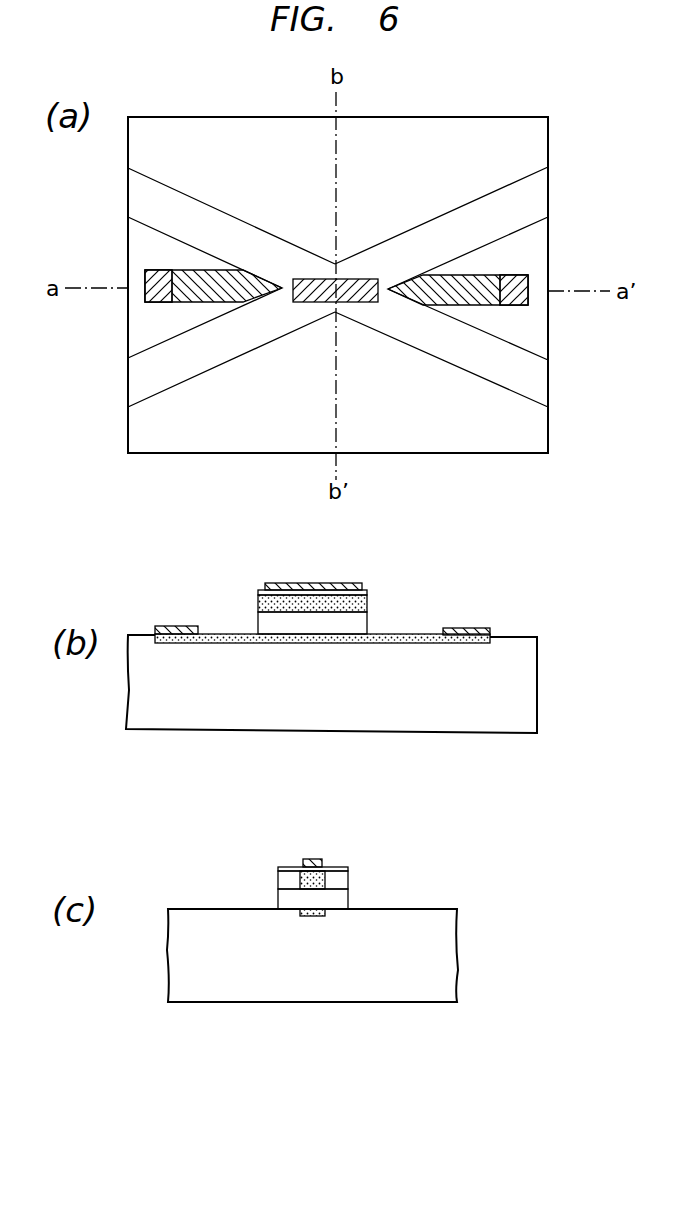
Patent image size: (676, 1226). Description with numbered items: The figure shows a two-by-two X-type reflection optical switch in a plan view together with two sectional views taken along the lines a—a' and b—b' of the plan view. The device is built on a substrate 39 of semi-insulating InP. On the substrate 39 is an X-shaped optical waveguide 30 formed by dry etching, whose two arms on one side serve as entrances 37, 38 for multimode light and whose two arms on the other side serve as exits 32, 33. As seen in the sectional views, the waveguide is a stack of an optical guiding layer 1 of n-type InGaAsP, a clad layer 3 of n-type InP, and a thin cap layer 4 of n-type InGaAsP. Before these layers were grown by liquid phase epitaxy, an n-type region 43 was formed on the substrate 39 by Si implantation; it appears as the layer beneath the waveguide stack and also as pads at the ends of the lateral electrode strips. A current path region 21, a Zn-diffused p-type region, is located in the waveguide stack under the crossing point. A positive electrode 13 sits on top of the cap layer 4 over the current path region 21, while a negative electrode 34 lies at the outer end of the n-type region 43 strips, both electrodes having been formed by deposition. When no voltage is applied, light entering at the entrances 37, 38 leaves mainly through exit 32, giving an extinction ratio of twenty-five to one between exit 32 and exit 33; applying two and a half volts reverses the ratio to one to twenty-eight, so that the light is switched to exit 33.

The substrate 39 is at (549, 133).
The entrance 37 is at (128, 190).
The entrance 38 is at (128, 380).
The exit 32 is at (549, 188).
The exit 33 is at (549, 378).
The optical waveguide 30 is at (431, 220).
The positive electrode 13 is at (355, 276).
The n-type region 43 is at (454, 276).
The negative electrode 34 is at (508, 275).
The current path region 21 is at (368, 604).
The cap layer 4 is at (368, 592).
The clad layer 3 is at (349, 880).
The optical guiding layer 1 is at (349, 898).